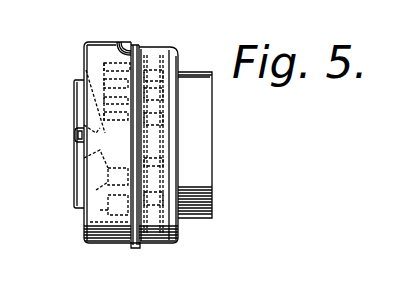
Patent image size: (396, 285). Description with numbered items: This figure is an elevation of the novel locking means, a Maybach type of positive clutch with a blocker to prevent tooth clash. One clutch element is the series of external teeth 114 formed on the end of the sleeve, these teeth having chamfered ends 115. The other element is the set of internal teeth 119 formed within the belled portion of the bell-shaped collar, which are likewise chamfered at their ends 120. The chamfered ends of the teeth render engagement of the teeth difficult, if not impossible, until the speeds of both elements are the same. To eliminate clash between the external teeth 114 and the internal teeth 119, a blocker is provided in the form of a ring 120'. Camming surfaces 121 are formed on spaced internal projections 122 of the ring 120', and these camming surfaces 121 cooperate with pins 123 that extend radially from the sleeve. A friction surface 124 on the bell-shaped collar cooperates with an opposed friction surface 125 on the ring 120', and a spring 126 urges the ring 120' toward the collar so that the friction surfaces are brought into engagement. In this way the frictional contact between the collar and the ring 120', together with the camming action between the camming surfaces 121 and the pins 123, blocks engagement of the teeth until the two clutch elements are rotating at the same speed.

The external teeth 114 is at (96, 190).
The chamfered ends 115 is at (86, 72).
The internal teeth 119 is at (163, 118).
The chamfered ends 120 is at (199, 145).
The ring 120' is at (89, 138).
The camming surfaces 121 is at (84, 125).
The internal projections 122 is at (77, 99).
The pins 123 is at (84, 158).
The friction surface 124 is at (117, 44).
The friction surface 125 is at (143, 241).
The spring 126 is at (78, 137).